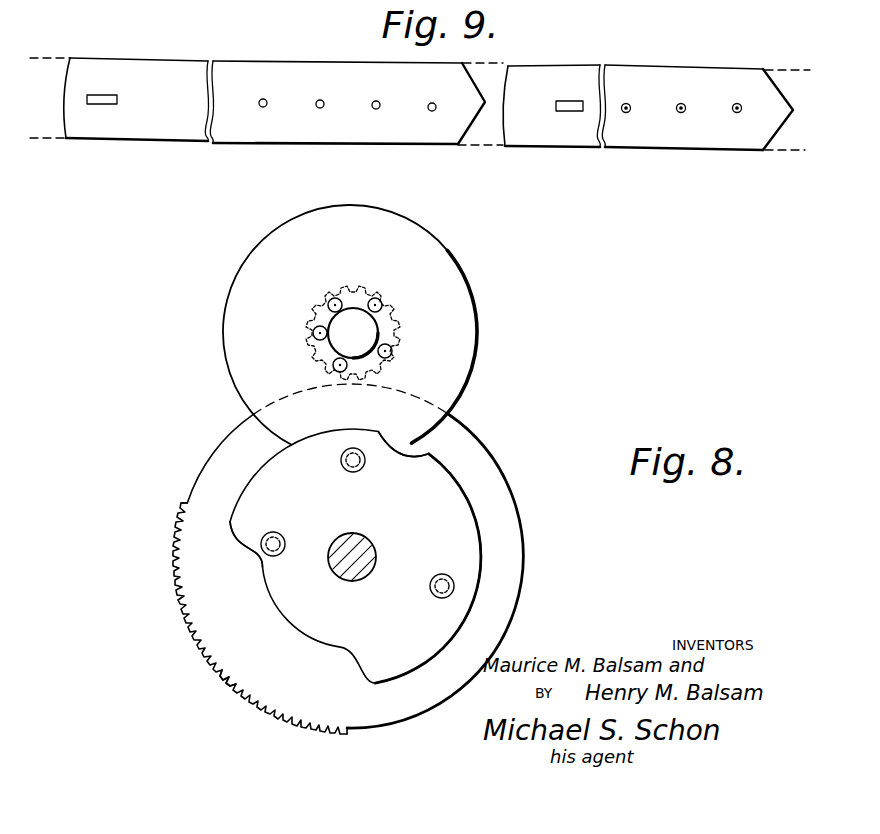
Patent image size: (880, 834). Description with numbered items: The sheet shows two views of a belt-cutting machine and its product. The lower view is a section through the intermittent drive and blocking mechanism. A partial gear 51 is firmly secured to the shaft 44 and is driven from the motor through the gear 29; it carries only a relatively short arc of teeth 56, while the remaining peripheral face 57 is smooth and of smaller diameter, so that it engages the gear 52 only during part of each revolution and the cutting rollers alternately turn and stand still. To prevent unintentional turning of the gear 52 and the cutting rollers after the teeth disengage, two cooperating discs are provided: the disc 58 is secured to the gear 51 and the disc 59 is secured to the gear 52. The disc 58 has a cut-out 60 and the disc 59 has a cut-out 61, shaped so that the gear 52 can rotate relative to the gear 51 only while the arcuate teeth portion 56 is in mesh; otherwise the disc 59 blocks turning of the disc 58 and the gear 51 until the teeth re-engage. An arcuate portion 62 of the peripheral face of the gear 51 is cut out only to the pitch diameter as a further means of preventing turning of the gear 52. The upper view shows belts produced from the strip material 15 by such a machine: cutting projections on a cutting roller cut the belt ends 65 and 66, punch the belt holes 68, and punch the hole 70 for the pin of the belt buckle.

In FIG. 9, the gear 29 is at (419, 104).
In FIG. 9, the strip material 15 is at (245, 134).
In FIG. 9, the end of belt 65 is at (474, 80).
In FIG. 9, the end of belt 66 is at (66, 125).
In FIG. 9, the belt holes 68 is at (265, 107).
In FIG. 9, the hole for the pin of the belt buckle 70 is at (108, 104).
In FIG. 8, the shaft 44 is at (374, 549).
In FIG. 8, the partial gear 51 is at (288, 700).
In FIG. 8, the gear 52 is at (388, 368).
In FIG. 8, the arc of teeth 56 is at (218, 682).
In FIG. 8, the peripheral face 57 is at (503, 638).
In FIG. 8, the disc 58 is at (458, 521).
In FIG. 8, the disc 59 is at (472, 358).
In FIG. 8, the cut-out 60 is at (240, 553).
In FIG. 8, the cut-out 61 is at (430, 448).
In FIG. 8, the arcuate portion 62 is at (186, 506).